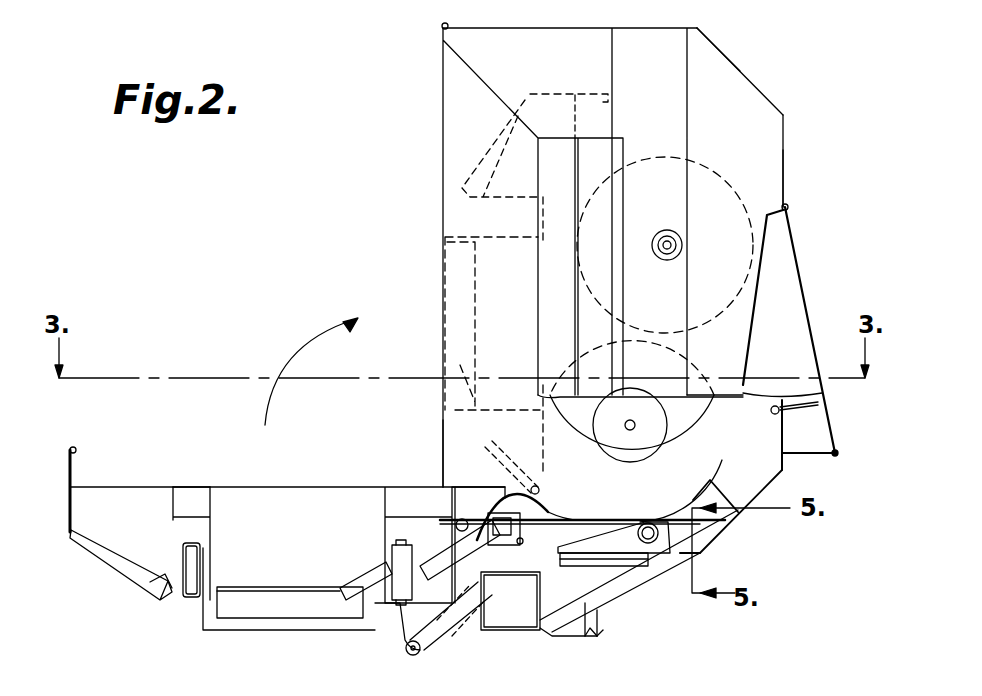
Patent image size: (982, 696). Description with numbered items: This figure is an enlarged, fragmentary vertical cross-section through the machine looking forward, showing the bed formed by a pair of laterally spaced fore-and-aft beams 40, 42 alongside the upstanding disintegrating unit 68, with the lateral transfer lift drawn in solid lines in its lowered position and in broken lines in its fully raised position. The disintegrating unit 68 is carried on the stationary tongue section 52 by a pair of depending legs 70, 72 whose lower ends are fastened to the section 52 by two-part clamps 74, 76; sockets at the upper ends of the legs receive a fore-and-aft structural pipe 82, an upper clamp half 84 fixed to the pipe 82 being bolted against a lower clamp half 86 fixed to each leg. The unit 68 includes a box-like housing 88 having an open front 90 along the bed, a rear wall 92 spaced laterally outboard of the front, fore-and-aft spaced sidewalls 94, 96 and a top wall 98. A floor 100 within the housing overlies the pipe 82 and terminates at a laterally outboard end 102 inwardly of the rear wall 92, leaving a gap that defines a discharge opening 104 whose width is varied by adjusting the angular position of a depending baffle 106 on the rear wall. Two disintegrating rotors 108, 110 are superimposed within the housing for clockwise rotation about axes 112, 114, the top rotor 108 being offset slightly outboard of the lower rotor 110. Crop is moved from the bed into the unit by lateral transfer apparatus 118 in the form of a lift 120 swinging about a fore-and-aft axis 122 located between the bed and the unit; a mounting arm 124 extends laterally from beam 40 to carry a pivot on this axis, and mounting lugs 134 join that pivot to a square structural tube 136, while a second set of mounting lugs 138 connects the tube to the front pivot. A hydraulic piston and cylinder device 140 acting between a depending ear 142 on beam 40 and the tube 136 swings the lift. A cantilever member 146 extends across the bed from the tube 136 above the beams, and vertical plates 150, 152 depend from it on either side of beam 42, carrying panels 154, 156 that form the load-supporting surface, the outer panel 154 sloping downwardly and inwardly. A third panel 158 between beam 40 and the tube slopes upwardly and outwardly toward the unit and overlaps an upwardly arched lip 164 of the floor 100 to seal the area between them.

The beam 40 is at (392, 548).
The beam 42 is at (193, 598).
The stationary section 52 is at (572, 636).
The disintegrating unit 68 is at (800, 90).
The leg 70 is at (625, 598).
The leg 72 is at (612, 578).
The two-part clamp 74 is at (518, 634).
The two-part clamp 76 is at (598, 636).
The structural pipe 82 is at (705, 548).
The upper clamp half 84 is at (700, 560).
The lower clamp half 86 is at (640, 566).
The housing 88 is at (745, 65).
The open front 90 is at (440, 112).
The rear wall 92 is at (785, 162).
The sidewall 94 is at (712, 68).
The sidewall 96 is at (452, 418).
The top wall 98 is at (536, 28).
The floor 100 is at (625, 513).
The laterally outboard end 102 is at (738, 508).
The discharge opening 104 is at (790, 478).
The baffle 106 is at (828, 425).
The disintegrating rotor 108 is at (727, 172).
The disintegrating rotor 110 is at (718, 410).
The axis 112 is at (665, 240).
The axis 114 is at (632, 420).
The lateral transfer apparatus 118 is at (58, 468).
The lift 120 is at (443, 272).
The swinging axis 122 is at (548, 550).
The mounting arm 124 is at (452, 600).
The mounting lugs 134 is at (510, 601).
The square structural tube 136 is at (487, 512).
The mounting lugs 138 is at (550, 512).
The hydraulic piston and cylinder device 140 is at (418, 655).
The depending ear 142 is at (372, 635).
The cantilever member 146 is at (202, 487).
The vertical plate 150 is at (152, 495).
The vertical plate 152 is at (270, 495).
The panel 154 is at (150, 551).
The panel 156 is at (258, 590).
The third panel 158 is at (432, 565).
The upwardly arched lip 164 is at (505, 478).